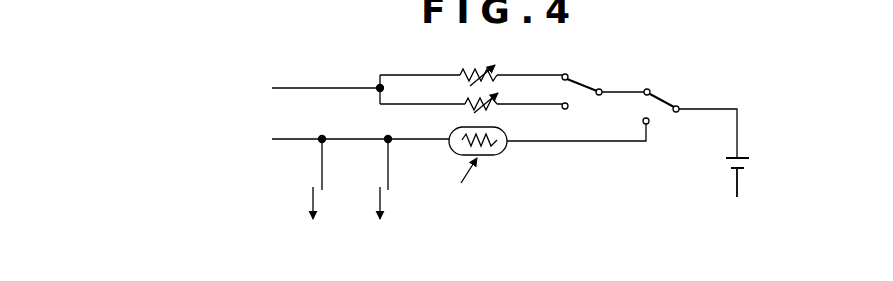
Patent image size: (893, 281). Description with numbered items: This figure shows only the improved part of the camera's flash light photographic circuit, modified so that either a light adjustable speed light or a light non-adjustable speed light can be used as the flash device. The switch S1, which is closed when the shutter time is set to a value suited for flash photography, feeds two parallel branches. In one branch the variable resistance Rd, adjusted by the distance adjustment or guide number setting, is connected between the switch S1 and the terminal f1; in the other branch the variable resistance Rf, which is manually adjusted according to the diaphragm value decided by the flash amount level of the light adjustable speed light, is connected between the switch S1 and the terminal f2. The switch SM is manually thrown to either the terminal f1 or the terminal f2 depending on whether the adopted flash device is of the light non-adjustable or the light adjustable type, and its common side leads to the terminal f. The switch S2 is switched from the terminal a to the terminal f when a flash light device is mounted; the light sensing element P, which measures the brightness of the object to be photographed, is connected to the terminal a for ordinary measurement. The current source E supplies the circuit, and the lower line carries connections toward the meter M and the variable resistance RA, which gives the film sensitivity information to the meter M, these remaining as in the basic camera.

The variable resistance Rf is at (511, 66).
The variable resistance Rd is at (468, 98).
The terminal f2 is at (564, 63).
The terminal f1 is at (561, 118).
The switch SM is at (605, 79).
The terminal f is at (645, 79).
The switch S2 is at (693, 121).
The terminal a is at (652, 129).
The current source E is at (732, 174).
The light sensing element P is at (500, 154).
The meter M is at (313, 238).
The variable resistance RA is at (381, 238).
The switch S1 is at (272, 112).